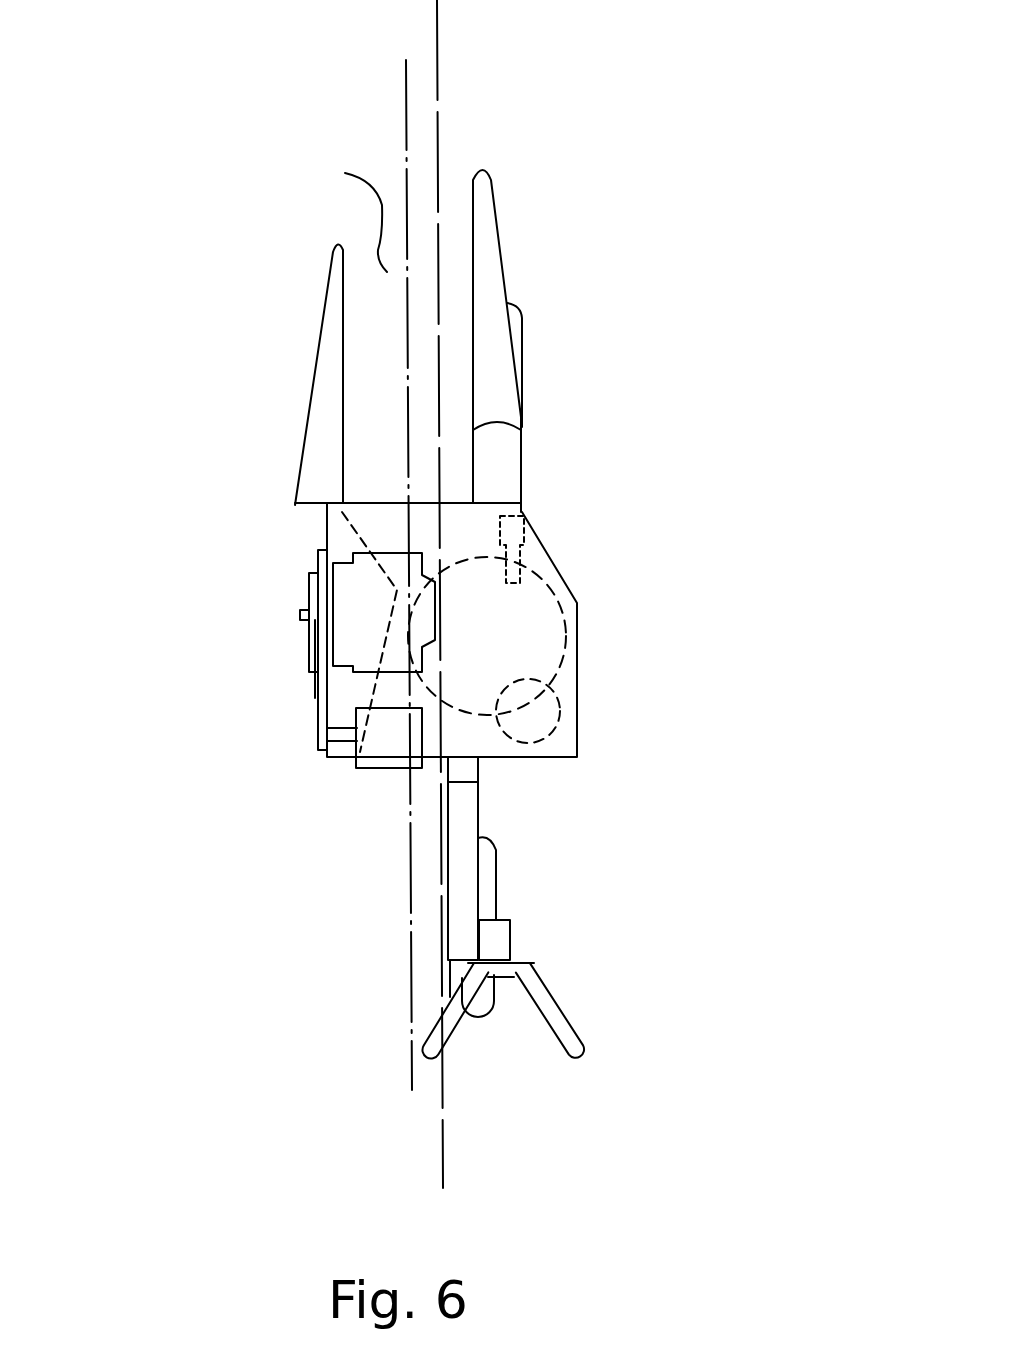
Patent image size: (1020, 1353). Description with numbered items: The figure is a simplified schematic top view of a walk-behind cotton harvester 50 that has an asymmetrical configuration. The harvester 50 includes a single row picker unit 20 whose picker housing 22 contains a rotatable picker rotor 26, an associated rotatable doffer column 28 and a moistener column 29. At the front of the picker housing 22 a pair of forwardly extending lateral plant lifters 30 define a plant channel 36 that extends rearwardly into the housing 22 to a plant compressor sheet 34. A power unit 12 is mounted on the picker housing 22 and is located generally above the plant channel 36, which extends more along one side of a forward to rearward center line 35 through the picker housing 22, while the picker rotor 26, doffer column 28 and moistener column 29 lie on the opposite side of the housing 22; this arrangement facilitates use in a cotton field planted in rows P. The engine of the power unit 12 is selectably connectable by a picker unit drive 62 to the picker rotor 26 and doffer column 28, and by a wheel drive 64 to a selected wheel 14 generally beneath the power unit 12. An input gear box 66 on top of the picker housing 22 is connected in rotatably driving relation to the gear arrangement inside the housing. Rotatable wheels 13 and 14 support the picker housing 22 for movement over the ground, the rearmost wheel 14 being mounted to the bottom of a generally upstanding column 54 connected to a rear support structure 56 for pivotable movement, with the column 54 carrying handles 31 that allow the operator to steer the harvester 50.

The rows P is at (407, 97).
The forward to rearward center line 35 is at (440, 32).
The lateral plant lifters 30 is at (327, 285).
The plant channel 36 is at (332, 216).
The rotatable wheel 13 is at (523, 325).
The single row picker unit 20 is at (583, 600).
The rotatable wheels 14 is at (318, 557).
The plant compressor sheet 34 is at (392, 580).
The wheel drive 64 is at (300, 633).
The picker unit drive 62 is at (308, 706).
The power unit 12 is at (360, 678).
The input gear box 66 is at (385, 770).
The moistener column 29 is at (525, 550).
The picker rotor 26 is at (545, 578).
The picker housing 22 is at (577, 685).
The doffer column 28 is at (562, 715).
The rear support structure 56 is at (452, 942).
The column 54 is at (514, 930).
The handles 31 is at (420, 1045).
The walk-behind cotton harvester 50 is at (142, 1063).